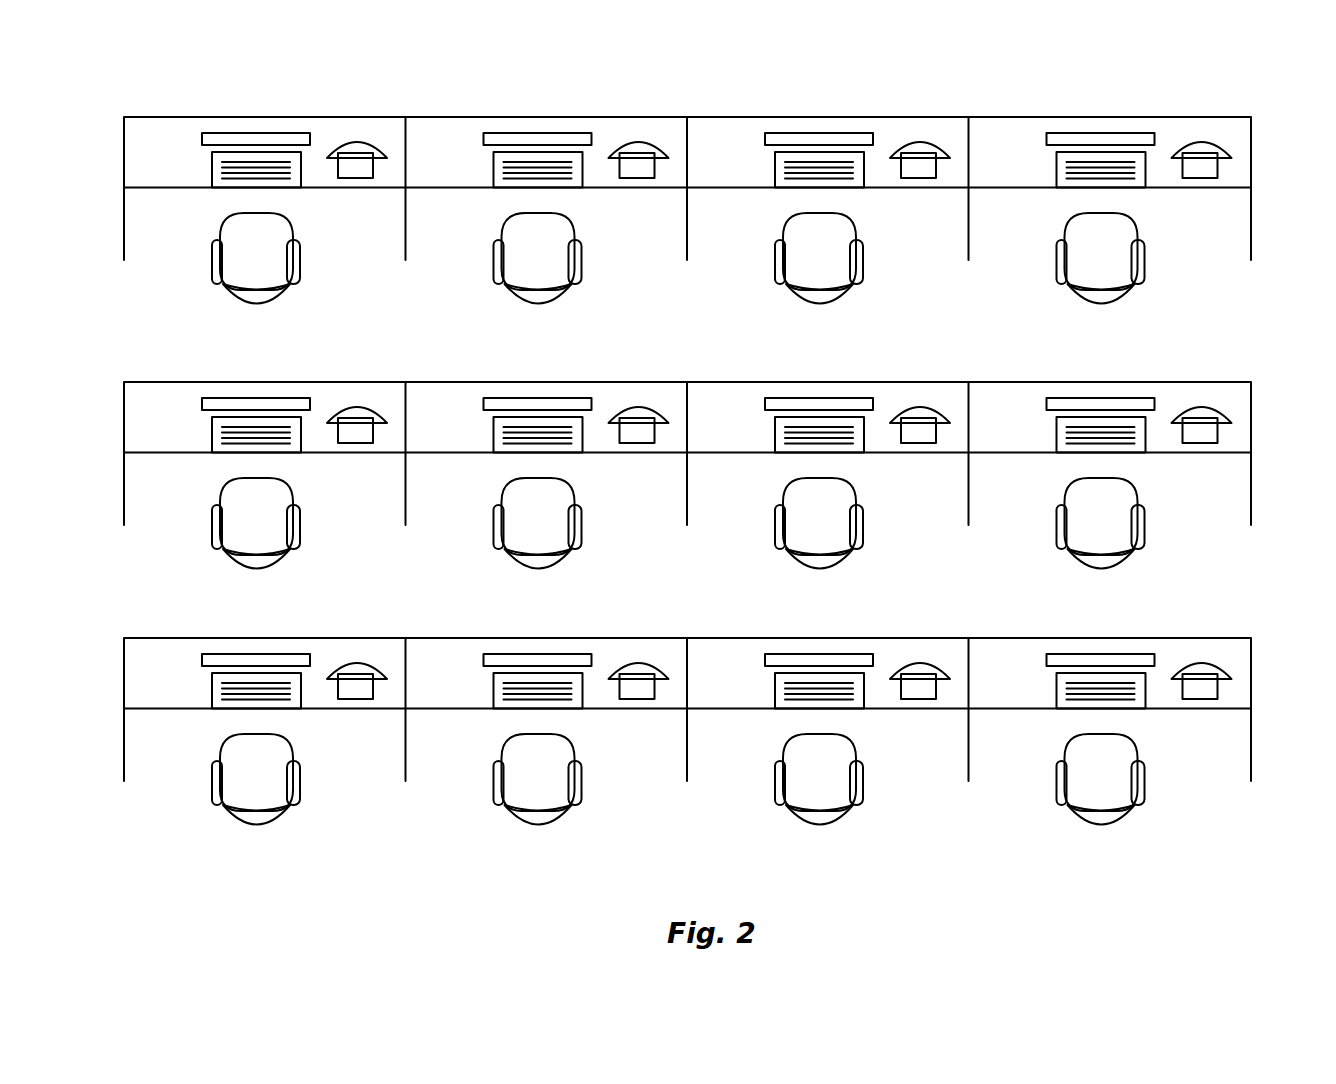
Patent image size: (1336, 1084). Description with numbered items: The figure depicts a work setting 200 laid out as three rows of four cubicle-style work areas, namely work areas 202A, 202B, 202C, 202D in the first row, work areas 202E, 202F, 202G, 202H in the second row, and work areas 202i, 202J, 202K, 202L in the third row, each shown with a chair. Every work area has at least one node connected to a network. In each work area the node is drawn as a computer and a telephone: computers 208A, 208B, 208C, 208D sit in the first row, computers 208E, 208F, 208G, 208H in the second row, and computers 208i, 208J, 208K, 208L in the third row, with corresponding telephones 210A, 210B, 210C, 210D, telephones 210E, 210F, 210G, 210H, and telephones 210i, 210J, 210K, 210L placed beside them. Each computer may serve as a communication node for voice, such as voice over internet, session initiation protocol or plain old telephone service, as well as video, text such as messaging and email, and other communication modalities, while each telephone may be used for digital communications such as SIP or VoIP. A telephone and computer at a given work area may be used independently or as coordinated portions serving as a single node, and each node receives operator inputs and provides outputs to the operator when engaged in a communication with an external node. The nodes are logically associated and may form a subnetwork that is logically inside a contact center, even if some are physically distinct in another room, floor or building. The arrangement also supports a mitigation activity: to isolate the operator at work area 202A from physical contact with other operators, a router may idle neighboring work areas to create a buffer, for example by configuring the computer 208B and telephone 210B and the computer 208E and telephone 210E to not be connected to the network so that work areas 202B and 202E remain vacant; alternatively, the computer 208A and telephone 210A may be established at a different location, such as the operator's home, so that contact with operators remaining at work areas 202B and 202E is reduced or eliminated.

The work setting 200 is at (142, 88).
The work area 202A is at (367, 257).
The work area 202B is at (648, 257).
The work area 202C is at (930, 257).
The work area 202D is at (1212, 257).
The work area 202E is at (367, 537).
The work area 202F is at (648, 537).
The work area 202G is at (930, 537).
The work area 202H is at (1212, 537).
The work area 202i is at (367, 788).
The work area 202J is at (648, 788).
The work area 202K is at (930, 788).
The work area 202L is at (1212, 788).
The computer 208A is at (243, 133).
The computer 208B is at (524, 133).
The computer 208C is at (806, 133).
The computer 208D is at (1088, 133).
The computer 208E is at (243, 398).
The computer 208F is at (524, 398).
The computer 208G is at (806, 398).
The computer 208H is at (1088, 398).
The computer 208i is at (243, 654).
The computer 208J is at (524, 654).
The computer 208K is at (806, 654).
The computer 208L is at (1088, 654).
The telephone 210A is at (362, 143).
The telephone 210B is at (644, 143).
The telephone 210C is at (925, 143).
The telephone 210D is at (1206, 143).
The telephone 210E is at (362, 408).
The telephone 210F is at (644, 408).
The telephone 210G is at (925, 408).
The telephone 210H is at (1206, 408).
The telephone 210i is at (362, 664).
The telephone 210J is at (644, 664).
The telephone 210K is at (925, 664).
The telephone 210L is at (1206, 664).